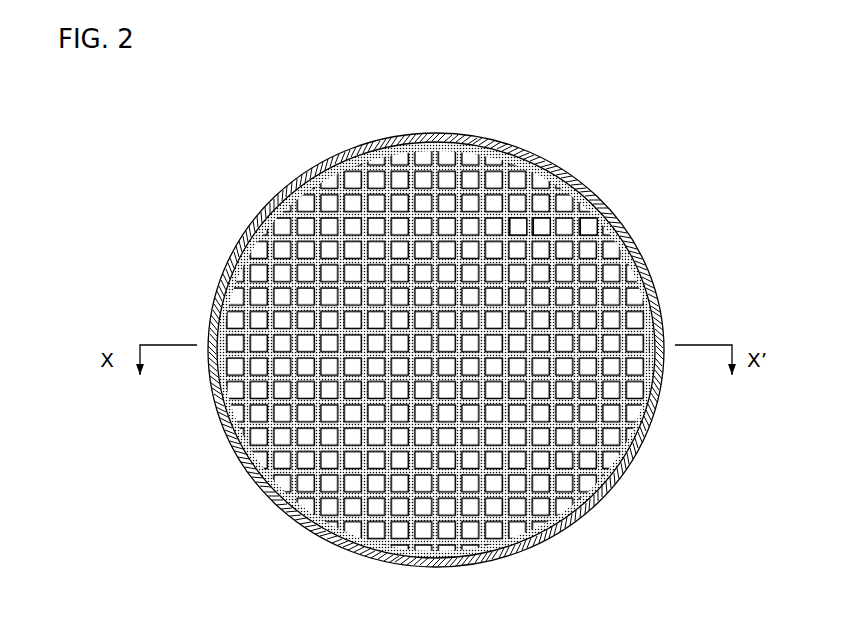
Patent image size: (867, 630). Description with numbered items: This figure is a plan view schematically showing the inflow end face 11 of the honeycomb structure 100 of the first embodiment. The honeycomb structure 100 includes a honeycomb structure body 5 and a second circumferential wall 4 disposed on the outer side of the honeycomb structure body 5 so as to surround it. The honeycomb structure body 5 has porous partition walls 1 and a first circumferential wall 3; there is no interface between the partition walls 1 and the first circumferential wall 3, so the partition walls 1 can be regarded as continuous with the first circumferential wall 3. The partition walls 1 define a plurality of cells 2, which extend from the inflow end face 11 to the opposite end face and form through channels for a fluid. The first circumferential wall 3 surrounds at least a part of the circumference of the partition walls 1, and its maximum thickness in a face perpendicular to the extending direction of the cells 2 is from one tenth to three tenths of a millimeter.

The partition wall 1 is at (530, 233).
The cell 2 is at (495, 225).
The first circumferential wall 3 is at (623, 247).
The second circumferential wall 4 is at (653, 280).
The honeycomb structure body 5 is at (590, 227).
The inflow end face 11 is at (262, 203).
The honeycomb structure 100 is at (708, 89).